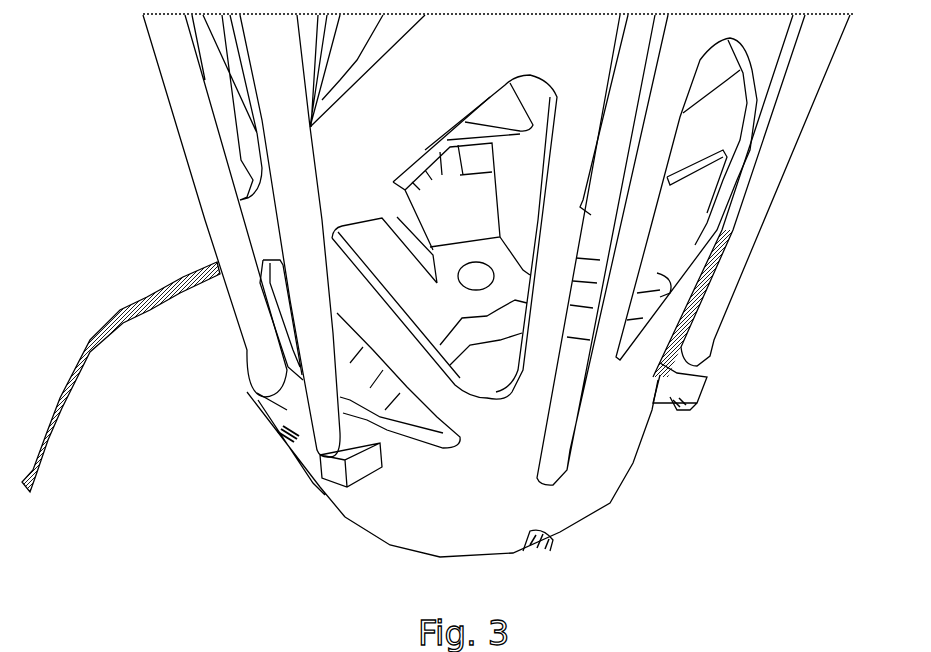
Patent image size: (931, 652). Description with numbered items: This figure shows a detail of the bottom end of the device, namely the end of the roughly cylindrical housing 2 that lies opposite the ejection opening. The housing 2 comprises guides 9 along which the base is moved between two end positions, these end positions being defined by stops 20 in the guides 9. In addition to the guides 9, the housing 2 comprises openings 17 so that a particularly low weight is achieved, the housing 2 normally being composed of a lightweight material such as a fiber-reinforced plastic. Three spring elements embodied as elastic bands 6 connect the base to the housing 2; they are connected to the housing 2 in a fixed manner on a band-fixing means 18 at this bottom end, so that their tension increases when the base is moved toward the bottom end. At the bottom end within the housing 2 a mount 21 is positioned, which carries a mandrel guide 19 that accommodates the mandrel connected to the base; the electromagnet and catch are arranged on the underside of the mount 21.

The housing 2 is at (487, 494).
The elastic bands 6 is at (330, 398).
The guide 9 is at (597, 307).
The openings 17 is at (706, 215).
The band-fixing means 18 is at (270, 418).
The mandrel guide 19 is at (483, 277).
The stops 20 is at (557, 473).
The mount 21 is at (453, 218).